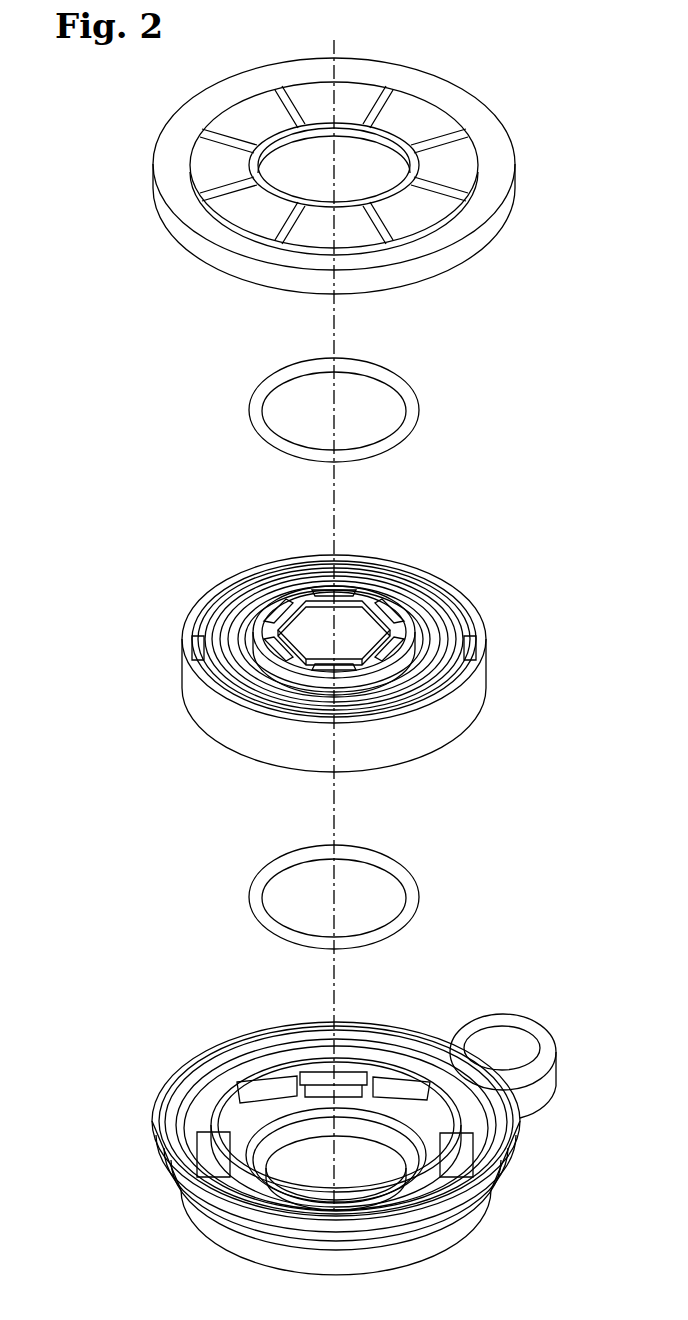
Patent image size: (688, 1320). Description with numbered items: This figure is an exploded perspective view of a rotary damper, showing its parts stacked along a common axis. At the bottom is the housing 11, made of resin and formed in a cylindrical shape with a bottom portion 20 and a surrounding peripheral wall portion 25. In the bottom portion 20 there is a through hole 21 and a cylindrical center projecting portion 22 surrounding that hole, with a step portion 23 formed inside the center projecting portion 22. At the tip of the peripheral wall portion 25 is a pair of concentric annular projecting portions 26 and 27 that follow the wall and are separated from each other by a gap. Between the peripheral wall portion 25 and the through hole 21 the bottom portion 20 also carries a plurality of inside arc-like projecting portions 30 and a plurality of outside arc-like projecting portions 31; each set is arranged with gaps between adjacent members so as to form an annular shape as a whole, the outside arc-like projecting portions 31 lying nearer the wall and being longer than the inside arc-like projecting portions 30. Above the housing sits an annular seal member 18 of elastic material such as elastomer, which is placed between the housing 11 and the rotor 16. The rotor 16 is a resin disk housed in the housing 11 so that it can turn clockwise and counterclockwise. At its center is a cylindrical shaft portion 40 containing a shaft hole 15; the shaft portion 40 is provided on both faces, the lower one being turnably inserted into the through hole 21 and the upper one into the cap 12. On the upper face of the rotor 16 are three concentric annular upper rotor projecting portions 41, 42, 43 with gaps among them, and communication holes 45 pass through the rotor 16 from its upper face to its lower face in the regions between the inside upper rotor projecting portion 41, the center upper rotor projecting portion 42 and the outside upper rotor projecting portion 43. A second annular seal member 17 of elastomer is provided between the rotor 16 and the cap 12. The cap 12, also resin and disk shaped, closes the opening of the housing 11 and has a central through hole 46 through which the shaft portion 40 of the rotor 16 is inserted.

The housing 11 is at (156, 1115).
The cap 12 is at (157, 140).
The shaft hole 15 is at (354, 614).
The rotor 16 is at (181, 676).
The annular seal member 17 is at (420, 410).
The annular seal member 18 is at (420, 897).
The bottom portion 20 is at (508, 1130).
The through hole 21 is at (384, 1150).
The center projecting portion 22 is at (403, 1100).
The step portion 23 is at (272, 1140).
The peripheral wall portion 25 is at (154, 1162).
The annular projecting portion 26 is at (247, 1038).
The annular projecting portion 27 is at (192, 1066).
The inside arc-like projecting portion 30 is at (286, 1090).
The outside arc-like projecting portion 31 is at (357, 1070).
The shaft portion 40 is at (408, 608).
The inside upper rotor projecting portion 41 is at (300, 582).
The center upper rotor projecting portion 42 is at (250, 588).
The outside upper rotor projecting portion 43 is at (206, 604).
The communication hole 45 is at (192, 640).
The through hole 46 is at (363, 137).